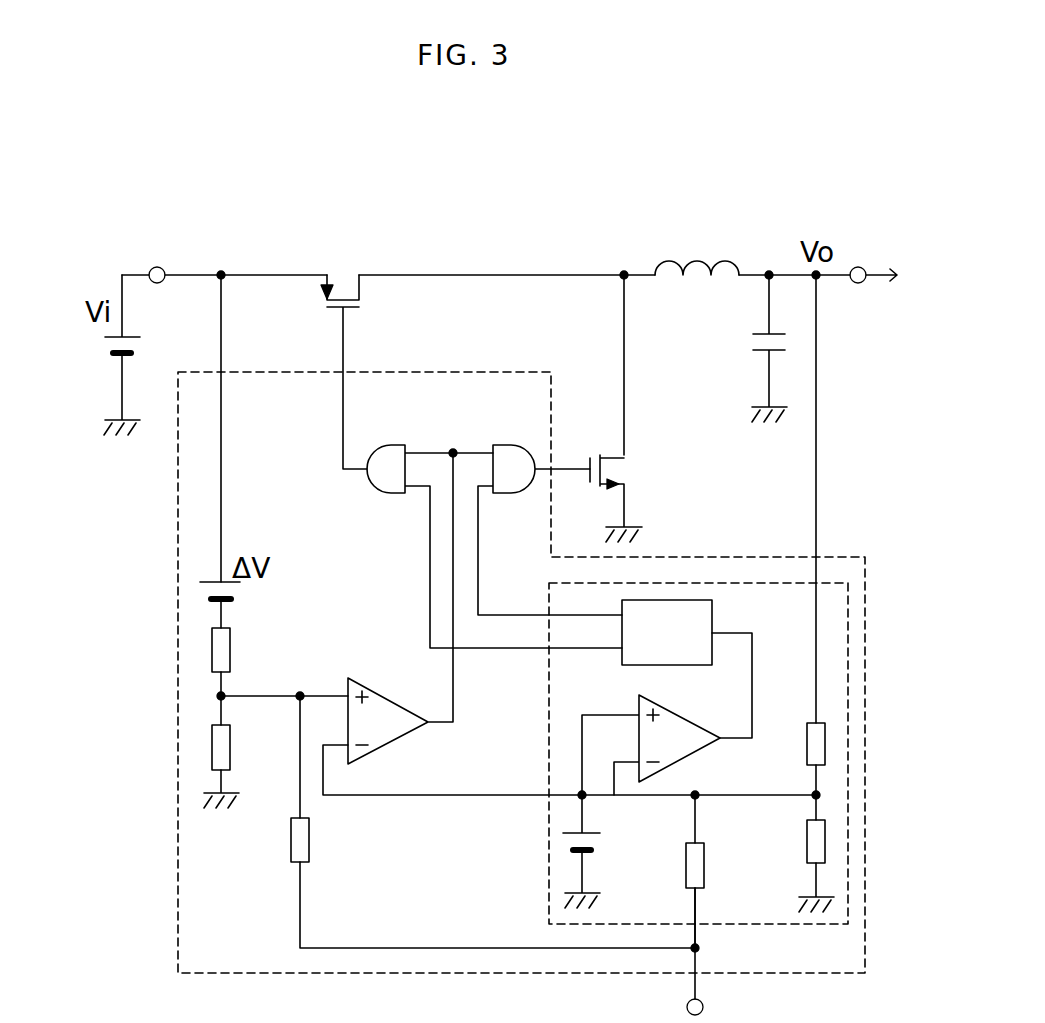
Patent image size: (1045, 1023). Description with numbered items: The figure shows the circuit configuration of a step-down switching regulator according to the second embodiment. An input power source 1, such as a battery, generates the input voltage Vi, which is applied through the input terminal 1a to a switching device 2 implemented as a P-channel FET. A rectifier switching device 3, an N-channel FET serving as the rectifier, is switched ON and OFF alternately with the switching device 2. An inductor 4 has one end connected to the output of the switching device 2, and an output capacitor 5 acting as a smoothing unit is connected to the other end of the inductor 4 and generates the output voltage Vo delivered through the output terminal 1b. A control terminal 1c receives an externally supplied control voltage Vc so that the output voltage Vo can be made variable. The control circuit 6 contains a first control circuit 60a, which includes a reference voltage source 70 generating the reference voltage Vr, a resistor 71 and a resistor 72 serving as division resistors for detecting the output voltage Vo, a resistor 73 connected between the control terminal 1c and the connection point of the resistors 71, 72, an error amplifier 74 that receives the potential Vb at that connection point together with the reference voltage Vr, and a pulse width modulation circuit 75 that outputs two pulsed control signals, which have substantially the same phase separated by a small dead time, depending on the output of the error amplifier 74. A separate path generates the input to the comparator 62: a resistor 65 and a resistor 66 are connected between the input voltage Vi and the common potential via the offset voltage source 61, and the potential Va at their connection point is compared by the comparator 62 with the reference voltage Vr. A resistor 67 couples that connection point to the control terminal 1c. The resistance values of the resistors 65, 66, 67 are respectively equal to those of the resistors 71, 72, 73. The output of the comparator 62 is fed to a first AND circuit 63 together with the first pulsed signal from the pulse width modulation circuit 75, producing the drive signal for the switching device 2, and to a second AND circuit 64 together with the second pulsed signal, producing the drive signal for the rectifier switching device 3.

The input power source 1 is at (116, 362).
The input terminal 1a is at (158, 267).
The output terminal 1b is at (858, 284).
The control terminal 1c is at (686, 1007).
The switching device 2 is at (357, 292).
The rectifier switching device 3 is at (613, 457).
The inductor 4 is at (697, 258).
The output capacitor 5 is at (758, 364).
The control circuit 6 is at (178, 660).
The first control circuit 60a is at (549, 854).
The offset voltage source 61 is at (232, 600).
The comparator 62 is at (388, 743).
The first AND circuit 63 is at (387, 496).
The second AND circuit 64 is at (510, 444).
The resistor 65 is at (231, 650).
The resistor 66 is at (231, 760).
The resistor 67 is at (310, 840).
The reference voltage source 70 is at (592, 852).
The resistor 71 is at (807, 748).
The resistor 72 is at (807, 841).
The resistor 73 is at (705, 860).
The error amplifier 74 is at (690, 757).
The pulse width modulation circuit 75 is at (700, 666).